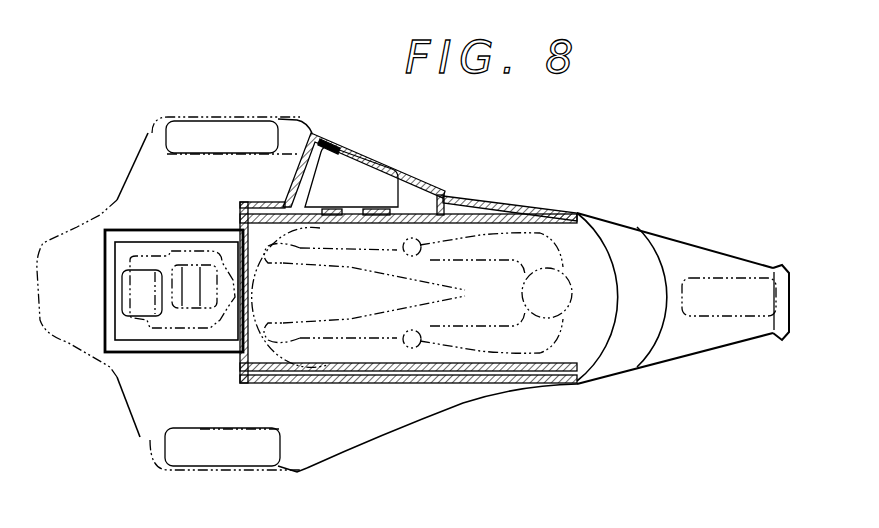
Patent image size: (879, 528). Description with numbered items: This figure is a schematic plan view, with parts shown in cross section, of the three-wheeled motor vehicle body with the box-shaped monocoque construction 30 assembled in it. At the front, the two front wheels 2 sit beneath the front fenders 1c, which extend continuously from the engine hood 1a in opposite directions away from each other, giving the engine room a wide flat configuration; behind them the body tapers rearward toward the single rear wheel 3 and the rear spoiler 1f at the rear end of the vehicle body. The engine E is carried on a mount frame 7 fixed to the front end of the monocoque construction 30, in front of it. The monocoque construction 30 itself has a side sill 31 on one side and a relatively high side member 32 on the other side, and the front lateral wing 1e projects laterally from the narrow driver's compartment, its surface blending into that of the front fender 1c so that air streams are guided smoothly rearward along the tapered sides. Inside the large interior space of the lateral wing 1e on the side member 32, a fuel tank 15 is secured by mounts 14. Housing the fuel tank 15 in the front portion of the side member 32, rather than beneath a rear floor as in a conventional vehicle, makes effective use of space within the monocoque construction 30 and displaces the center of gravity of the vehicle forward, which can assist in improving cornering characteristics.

The engine hood 1a is at (133, 227).
The front fender 1c is at (167, 148).
The front lateral wing 1e is at (352, 150).
The rear spoiler 1f is at (787, 268).
The front wheel 2 is at (152, 132).
The rear wheel 3 is at (713, 277).
The mount frame 7 is at (163, 342).
The engine E is at (208, 325).
The mount 14 is at (327, 143).
The fuel tank 15 is at (373, 183).
The monocoque construction body 30 is at (485, 199).
The side sill 31 is at (460, 386).
The side member 32 is at (447, 195).